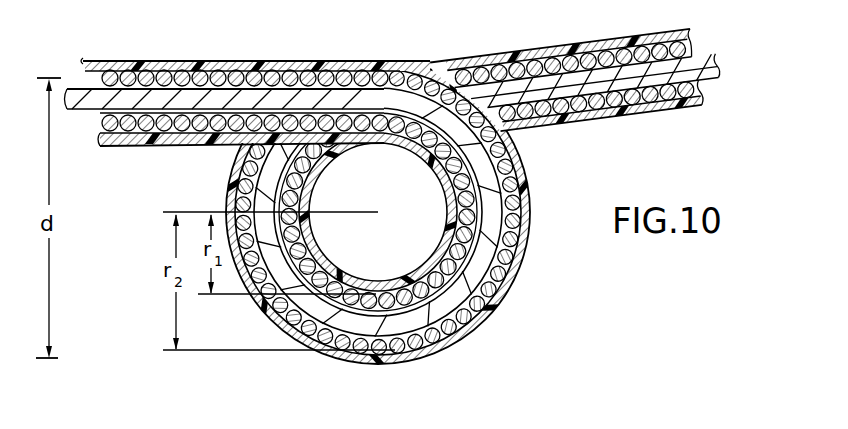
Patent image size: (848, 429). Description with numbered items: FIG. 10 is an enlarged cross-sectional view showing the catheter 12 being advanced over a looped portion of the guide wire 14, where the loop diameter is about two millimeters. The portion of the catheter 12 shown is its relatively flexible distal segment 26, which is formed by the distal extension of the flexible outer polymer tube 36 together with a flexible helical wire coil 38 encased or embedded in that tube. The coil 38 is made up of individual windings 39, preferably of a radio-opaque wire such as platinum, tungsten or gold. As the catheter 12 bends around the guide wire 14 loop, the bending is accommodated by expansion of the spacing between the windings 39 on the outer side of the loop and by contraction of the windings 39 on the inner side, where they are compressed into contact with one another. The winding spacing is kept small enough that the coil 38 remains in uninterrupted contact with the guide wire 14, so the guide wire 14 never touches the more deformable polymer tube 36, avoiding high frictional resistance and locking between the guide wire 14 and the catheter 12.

The catheter 12 is at (404, 203).
The guide wire 14 is at (702, 70).
The distal segment 26 is at (220, 56).
The outer tube 36 is at (522, 233).
The helical wire coil 38 is at (684, 41).
The windings 39 is at (645, 99).